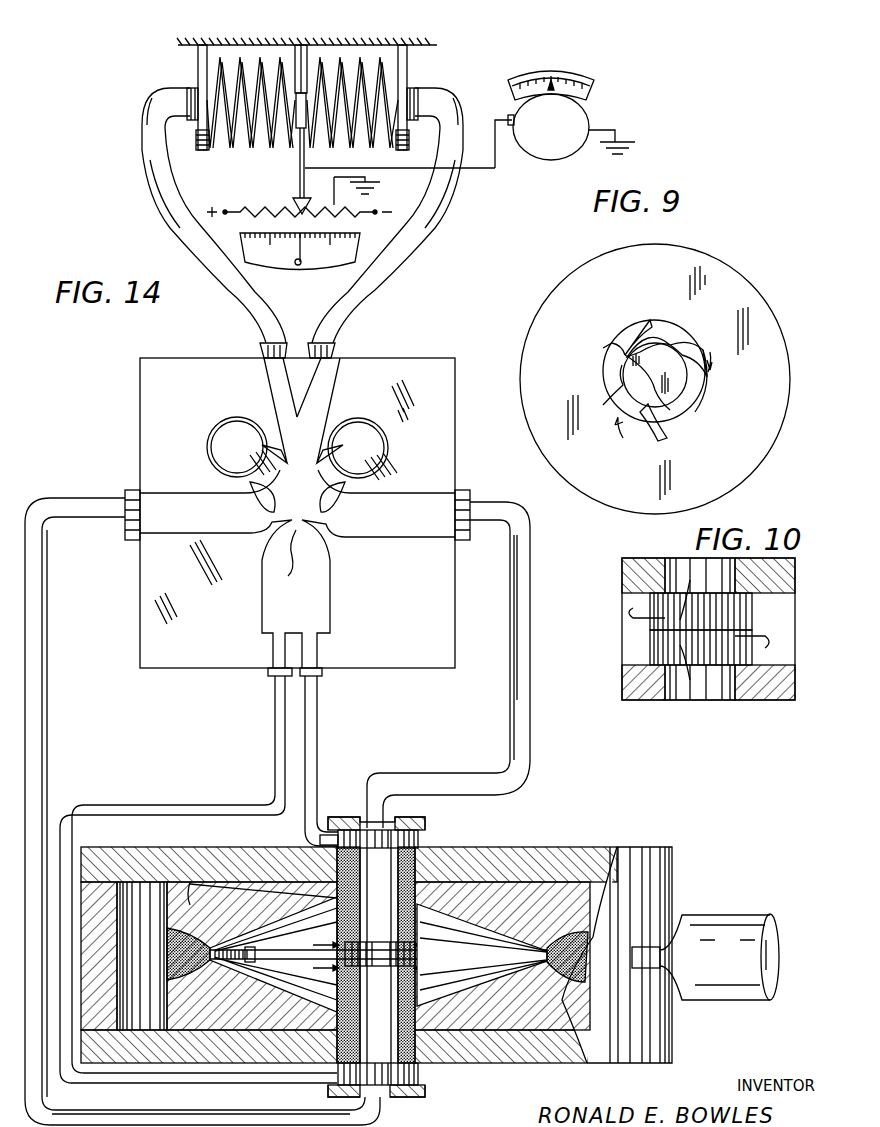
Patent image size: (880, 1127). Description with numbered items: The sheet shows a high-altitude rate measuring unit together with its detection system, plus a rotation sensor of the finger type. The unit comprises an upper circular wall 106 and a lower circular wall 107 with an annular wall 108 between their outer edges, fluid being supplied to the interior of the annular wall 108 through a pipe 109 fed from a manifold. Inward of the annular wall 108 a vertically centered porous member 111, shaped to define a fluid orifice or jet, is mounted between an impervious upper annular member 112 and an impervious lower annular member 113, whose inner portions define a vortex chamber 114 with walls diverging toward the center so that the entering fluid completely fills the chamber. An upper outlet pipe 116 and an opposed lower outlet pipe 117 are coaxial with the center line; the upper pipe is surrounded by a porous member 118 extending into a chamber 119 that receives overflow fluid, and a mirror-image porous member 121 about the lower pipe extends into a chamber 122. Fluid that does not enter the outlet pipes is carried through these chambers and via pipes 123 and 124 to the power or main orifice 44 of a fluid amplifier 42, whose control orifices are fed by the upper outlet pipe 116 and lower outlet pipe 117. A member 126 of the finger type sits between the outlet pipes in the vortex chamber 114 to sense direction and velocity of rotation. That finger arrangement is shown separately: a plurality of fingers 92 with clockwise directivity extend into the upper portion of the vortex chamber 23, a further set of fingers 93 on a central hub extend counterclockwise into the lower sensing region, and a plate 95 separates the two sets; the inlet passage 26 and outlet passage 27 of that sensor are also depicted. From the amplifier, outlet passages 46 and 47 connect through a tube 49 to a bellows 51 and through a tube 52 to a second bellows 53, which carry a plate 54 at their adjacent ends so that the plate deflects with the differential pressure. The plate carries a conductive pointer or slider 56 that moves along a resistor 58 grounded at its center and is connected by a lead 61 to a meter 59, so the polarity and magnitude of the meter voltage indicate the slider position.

In FIG. 9, the vortex chamber 23 is at (790, 420).
In FIG. 10, the inlet passage 26 is at (680, 557).
In FIG. 10, the outlet passage 27 is at (698, 700).
In FIG. 14, the fluid amplifier 42 is at (418, 378).
In FIG. 14, the power or main orifice 44 is at (297, 573).
In FIG. 14, the outlet passage 46 is at (273, 391).
In FIG. 14, the outlet passage 47 is at (320, 388).
In FIG. 14, the pipe or tube 49 is at (192, 230).
In FIG. 14, the bellows 51 is at (220, 75).
In FIG. 14, the tube or pipe 52 is at (430, 222).
In FIG. 14, the second bellows 53 is at (385, 78).
In FIG. 14, the plate 54 is at (303, 48).
In FIG. 14, the pointer 56 is at (300, 163).
In FIG. 14, the resistor 58 is at (270, 200).
In FIG. 14, the meter 59 is at (580, 118).
In FIG. 14, the lead 61 is at (468, 170).
In FIG. 9, the fingers 92 is at (636, 335).
In FIG. 9, the fingers 93 is at (650, 462).
In FIG. 9, the plate 95 is at (660, 327).
In FIG. 14, the upper circular wall 106 is at (142, 862).
In FIG. 14, the lower circular wall 107 is at (190, 1052).
In FIG. 14, the annular wall 108 is at (95, 880).
In FIG. 14, the pipe 109 is at (680, 915).
In FIG. 14, the porous member 111 is at (183, 932).
In FIG. 14, the upper annular member 112 is at (268, 885).
In FIG. 14, the lower annular member 113 is at (258, 1020).
In FIG. 14, the vortex chamber 114 is at (440, 930).
In FIG. 14, the upper outlet pipe 116 is at (380, 860).
In FIG. 14, the lower outlet pipe 117 is at (45, 612).
In FIG. 14, the porous member 118 is at (405, 868).
In FIG. 14, the chamber 119 is at (420, 822).
In FIG. 14, the porous member 121 is at (385, 1055).
In FIG. 14, the chamber 122 is at (405, 1088).
In FIG. 14, the pipe 123 is at (317, 728).
In FIG. 14, the pipe 124 is at (276, 730).
In FIG. 14, the member 126 is at (348, 962).